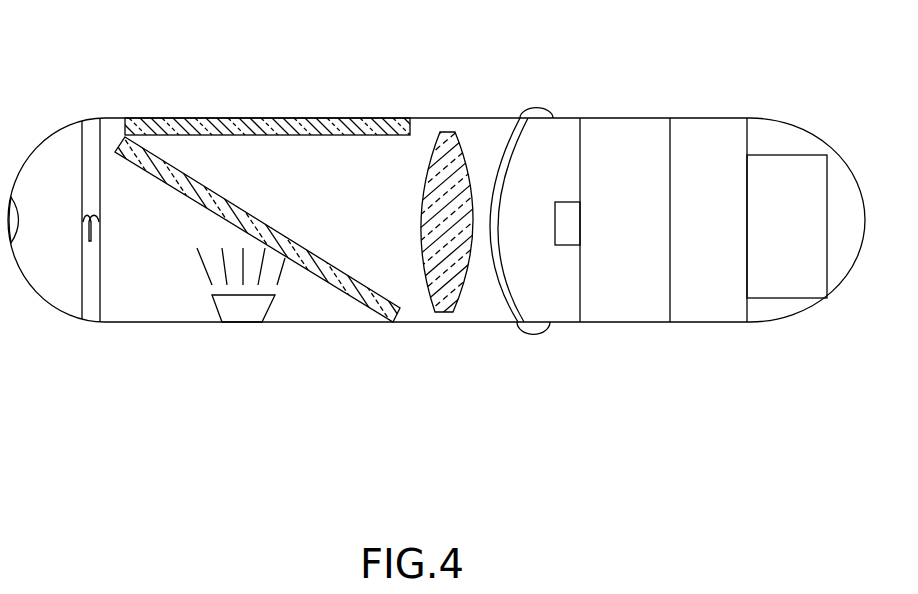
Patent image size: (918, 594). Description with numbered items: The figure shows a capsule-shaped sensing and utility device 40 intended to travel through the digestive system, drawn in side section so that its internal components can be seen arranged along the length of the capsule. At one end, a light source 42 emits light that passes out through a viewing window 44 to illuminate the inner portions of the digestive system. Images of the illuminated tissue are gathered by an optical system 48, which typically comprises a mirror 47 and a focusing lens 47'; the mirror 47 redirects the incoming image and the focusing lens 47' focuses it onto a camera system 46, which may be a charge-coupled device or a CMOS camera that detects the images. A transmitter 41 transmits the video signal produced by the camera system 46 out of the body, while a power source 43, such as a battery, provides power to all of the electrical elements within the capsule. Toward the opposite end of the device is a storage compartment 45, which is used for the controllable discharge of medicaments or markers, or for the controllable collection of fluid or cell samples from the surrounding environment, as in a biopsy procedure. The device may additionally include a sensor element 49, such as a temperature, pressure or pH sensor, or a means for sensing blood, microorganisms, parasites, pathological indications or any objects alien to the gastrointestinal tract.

The sensing and utility device 40 is at (736, 74).
The transmitter 41 is at (702, 308).
The light source 42 is at (243, 312).
The power source 43 is at (782, 285).
The viewing window 44 is at (227, 117).
The storage compartment 45 is at (38, 270).
The camera system 46 is at (618, 150).
The mirror 47 is at (264, 197).
The focusing lens 47' is at (454, 229).
The optical system 48 is at (368, 340).
The sensor element 49 is at (510, 297).